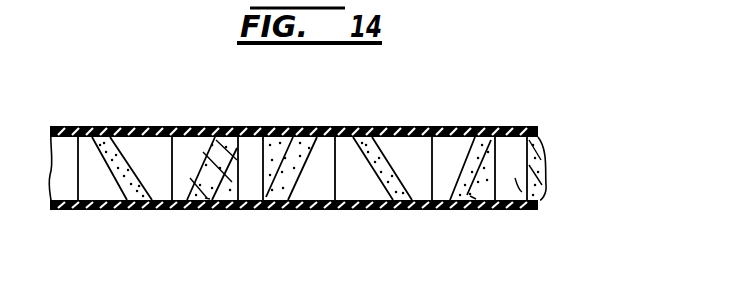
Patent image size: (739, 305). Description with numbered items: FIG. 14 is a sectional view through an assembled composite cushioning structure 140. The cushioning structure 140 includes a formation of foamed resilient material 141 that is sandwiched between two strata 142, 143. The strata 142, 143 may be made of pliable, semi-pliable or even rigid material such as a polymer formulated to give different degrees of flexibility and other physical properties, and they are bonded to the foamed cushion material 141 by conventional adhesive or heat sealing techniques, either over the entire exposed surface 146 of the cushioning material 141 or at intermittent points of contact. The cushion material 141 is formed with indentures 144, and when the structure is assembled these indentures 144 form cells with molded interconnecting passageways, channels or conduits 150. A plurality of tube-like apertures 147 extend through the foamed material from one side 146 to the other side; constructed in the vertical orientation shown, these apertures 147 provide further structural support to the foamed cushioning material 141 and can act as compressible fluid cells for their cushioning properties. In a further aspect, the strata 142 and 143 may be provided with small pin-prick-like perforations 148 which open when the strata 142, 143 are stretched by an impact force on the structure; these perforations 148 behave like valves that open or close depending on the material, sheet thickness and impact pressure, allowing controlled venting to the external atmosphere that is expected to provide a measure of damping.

The cushioning structure 140 is at (512, 122).
The foamed resilient material 141 is at (228, 128).
The stratum 142 is at (370, 137).
The stratum 143 is at (441, 208).
The indentures 144 is at (191, 150).
The exposed surface 146 is at (302, 128).
The tube-like apertures 147 is at (250, 150).
The perforations 148 is at (158, 127).
The interconnecting passageways 150 is at (216, 210).